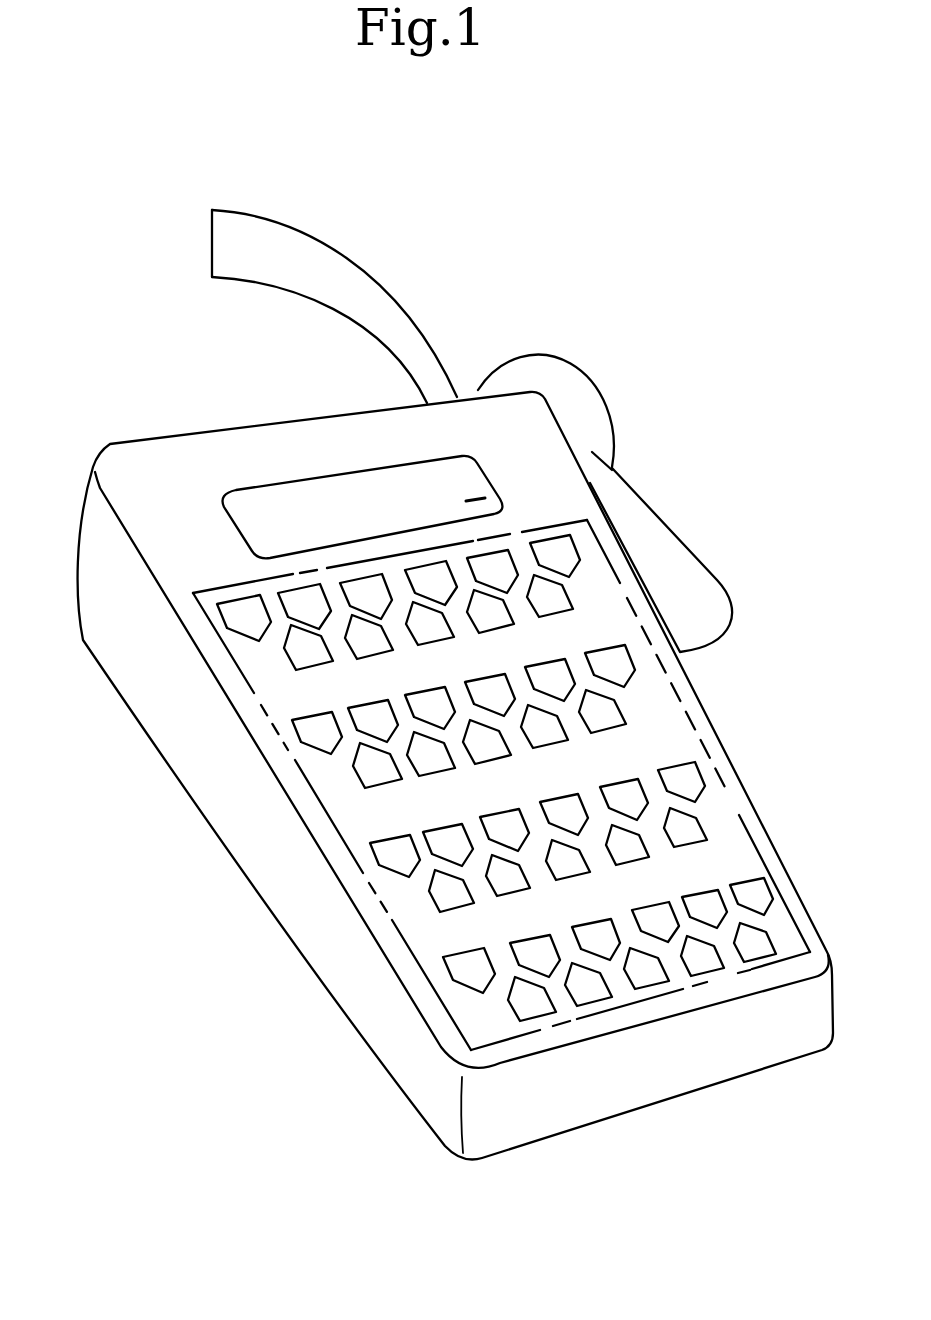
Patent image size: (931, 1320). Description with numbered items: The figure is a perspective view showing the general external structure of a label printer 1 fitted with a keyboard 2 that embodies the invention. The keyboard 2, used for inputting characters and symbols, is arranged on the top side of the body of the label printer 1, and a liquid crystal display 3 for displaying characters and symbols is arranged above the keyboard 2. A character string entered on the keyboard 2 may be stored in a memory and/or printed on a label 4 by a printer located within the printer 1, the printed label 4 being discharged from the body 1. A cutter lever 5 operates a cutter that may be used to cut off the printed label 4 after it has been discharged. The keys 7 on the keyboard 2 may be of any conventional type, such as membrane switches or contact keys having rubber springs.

The label printer 1 is at (182, 458).
The keyboard 2 is at (476, 839).
The liquid crystal display 3 is at (357, 478).
The label 4 is at (242, 232).
The cutter lever 5 is at (690, 563).
The keys 7 is at (468, 967).